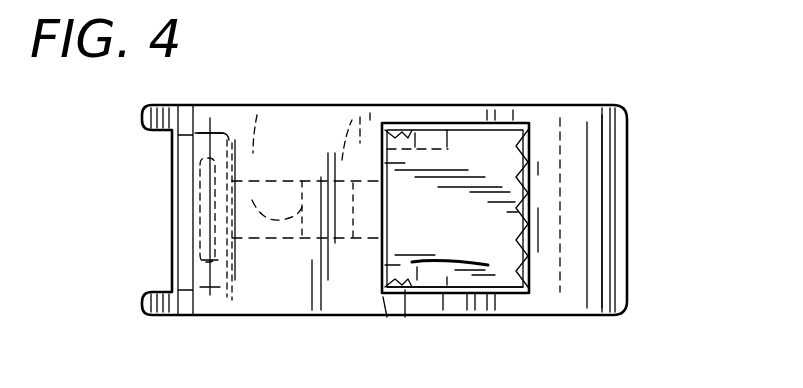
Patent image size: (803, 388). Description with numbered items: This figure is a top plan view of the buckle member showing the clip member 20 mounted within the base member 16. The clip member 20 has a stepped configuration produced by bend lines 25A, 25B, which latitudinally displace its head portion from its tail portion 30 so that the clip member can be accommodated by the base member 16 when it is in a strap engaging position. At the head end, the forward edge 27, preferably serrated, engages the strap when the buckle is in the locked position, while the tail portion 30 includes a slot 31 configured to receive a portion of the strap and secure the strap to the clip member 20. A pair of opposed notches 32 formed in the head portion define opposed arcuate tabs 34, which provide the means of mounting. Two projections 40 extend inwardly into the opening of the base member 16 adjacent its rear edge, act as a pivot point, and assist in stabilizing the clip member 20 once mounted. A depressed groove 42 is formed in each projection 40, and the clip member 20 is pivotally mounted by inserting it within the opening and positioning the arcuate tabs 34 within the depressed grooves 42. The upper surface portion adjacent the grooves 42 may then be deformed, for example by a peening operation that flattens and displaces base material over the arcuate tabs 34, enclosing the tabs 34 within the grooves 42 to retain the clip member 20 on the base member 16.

The base member 16 is at (290, 167).
The clip member 20 is at (473, 229).
The bend line 25A is at (258, 105).
The bend line 25B is at (370, 105).
The forward edge 27 is at (532, 192).
The tail portion 30 is at (180, 222).
The slot 31 is at (212, 300).
The notches 32 is at (407, 297).
The arcuate tabs 34 is at (387, 125).
The projections 40 is at (437, 118).
The depressed groove 42 is at (450, 160).